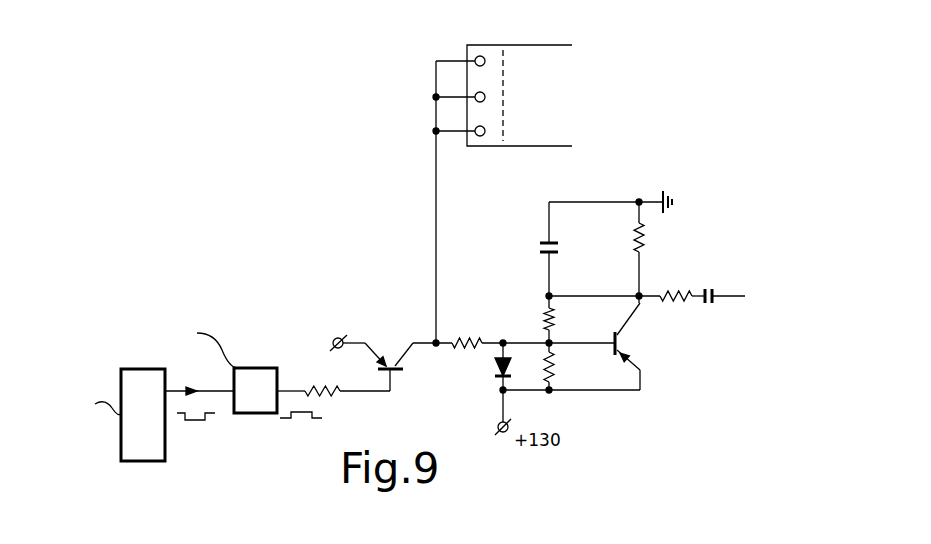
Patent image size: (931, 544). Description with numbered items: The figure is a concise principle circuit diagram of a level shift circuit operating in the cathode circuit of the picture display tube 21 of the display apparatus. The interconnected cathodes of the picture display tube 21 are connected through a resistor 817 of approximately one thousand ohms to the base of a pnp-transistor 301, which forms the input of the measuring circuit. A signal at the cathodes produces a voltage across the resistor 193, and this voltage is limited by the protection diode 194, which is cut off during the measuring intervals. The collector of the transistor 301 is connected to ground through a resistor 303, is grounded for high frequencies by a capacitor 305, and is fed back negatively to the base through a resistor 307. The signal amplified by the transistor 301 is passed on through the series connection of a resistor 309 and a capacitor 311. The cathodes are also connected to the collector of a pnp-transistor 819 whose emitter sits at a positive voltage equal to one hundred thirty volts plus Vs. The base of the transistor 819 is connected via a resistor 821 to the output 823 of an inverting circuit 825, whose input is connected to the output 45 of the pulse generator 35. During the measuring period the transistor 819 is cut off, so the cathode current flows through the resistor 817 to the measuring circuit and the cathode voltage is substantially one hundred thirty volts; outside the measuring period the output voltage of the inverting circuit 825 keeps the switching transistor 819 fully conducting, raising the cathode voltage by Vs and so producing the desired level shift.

The picture display tube 21 is at (511, 60).
The pulse generator 35 is at (150, 443).
The output of the pulse generator 45 is at (168, 390).
The inverting circuit 825 is at (245, 400).
The output of the inverting circuit 823 is at (280, 394).
The resistor 821 is at (338, 394).
The pnp-transistor 819 is at (392, 362).
The resistor 817 is at (455, 342).
The protection diode 194 is at (497, 378).
The resistor 193 is at (560, 367).
The resistor 307 is at (545, 312).
The capacitor 305 is at (541, 256).
The resistor 303 is at (645, 246).
The pnp-transistor 301 is at (630, 349).
The resistor 309 is at (665, 299).
The capacitor 311 is at (713, 300).